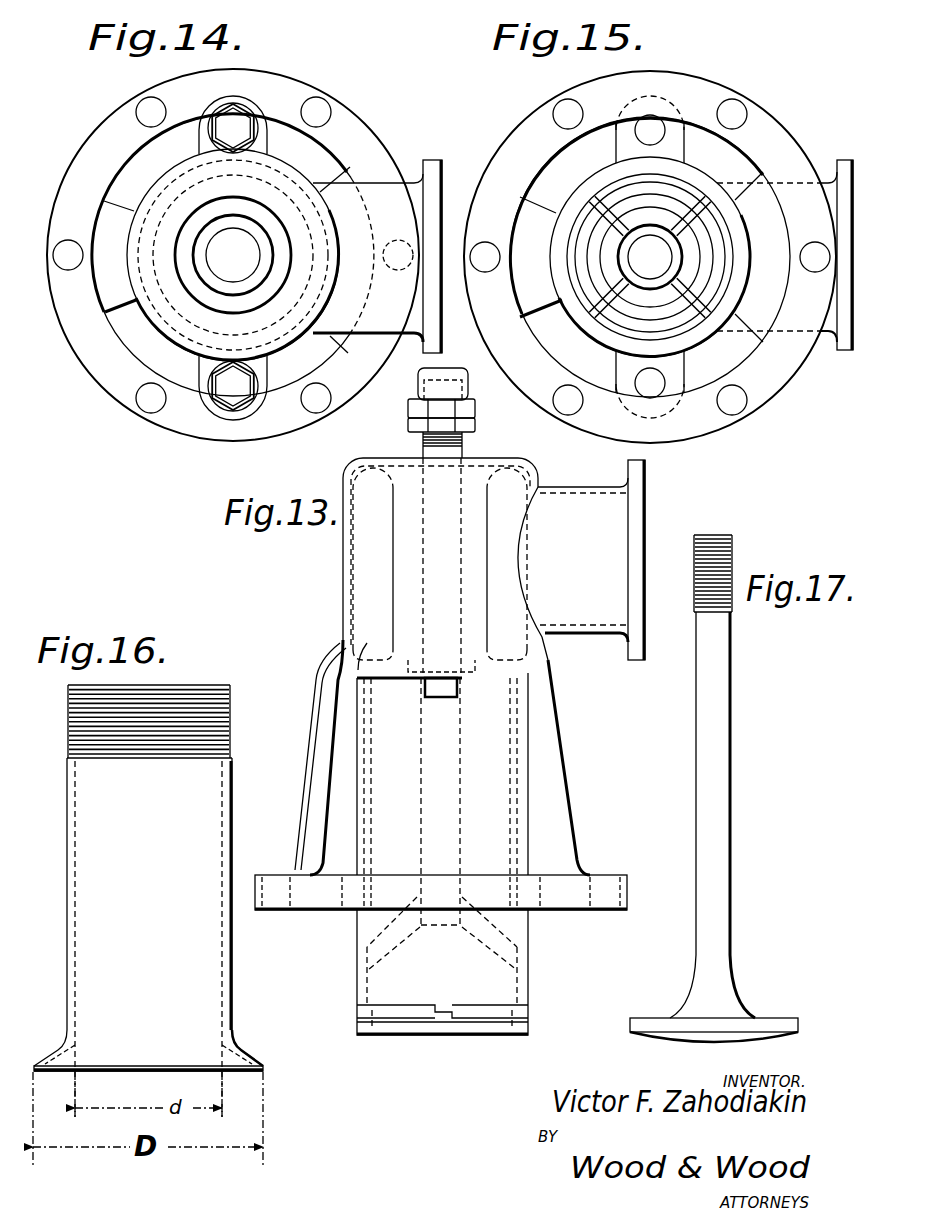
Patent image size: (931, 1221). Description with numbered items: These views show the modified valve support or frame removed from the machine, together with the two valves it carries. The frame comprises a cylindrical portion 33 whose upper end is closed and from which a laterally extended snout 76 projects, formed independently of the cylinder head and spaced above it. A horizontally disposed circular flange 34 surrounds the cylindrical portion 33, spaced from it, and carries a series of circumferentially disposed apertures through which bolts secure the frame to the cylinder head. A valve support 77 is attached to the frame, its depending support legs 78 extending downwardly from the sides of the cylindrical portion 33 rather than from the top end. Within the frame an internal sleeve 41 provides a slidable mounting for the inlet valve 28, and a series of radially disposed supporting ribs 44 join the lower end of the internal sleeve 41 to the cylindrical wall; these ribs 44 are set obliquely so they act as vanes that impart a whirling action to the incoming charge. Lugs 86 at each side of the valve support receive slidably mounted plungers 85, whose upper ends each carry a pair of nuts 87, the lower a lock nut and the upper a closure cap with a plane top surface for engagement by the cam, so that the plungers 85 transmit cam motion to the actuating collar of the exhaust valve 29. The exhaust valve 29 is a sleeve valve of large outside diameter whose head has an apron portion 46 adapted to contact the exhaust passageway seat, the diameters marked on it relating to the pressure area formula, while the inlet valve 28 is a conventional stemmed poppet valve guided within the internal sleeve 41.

In FIG. 17, the inlet valve 28 is at (698, 1030).
In FIG. 16, the exhaust valve 29 is at (149, 901).
In FIG. 13, the cylindrical portion 33 is at (442, 854).
In FIG. 14, the circular flange 34 is at (89, 158).
In FIG. 15, the circular flange 34 is at (519, 136).
In FIG. 13, the circular flange 34 is at (606, 879).
In FIG. 14, the internal sleeve 41 is at (233, 255).
In FIG. 15, the internal sleeve 41 is at (652, 278).
In FIG. 15, the supporting ribs 44 is at (600, 217).
In FIG. 16, the apron portion 46 is at (146, 1058).
In FIG. 14, the snout 76 is at (383, 188).
In FIG. 15, the snout 76 is at (780, 253).
In FIG. 13, the snout 76 is at (591, 560).
In FIG. 13, the valve support 77 is at (322, 655).
In FIG. 14, the support legs 78 is at (233, 255).
In FIG. 15, the support legs 78 is at (724, 153).
In FIG. 13, the support legs 78 is at (308, 793).
In FIG. 14, the plungers 85 is at (224, 399).
In FIG. 13, the plungers 85 is at (450, 456).
In FIG. 14, the lugs 86 is at (258, 399).
In FIG. 15, the lugs 86 is at (675, 375).
In FIG. 13, the nuts 87 is at (462, 425).